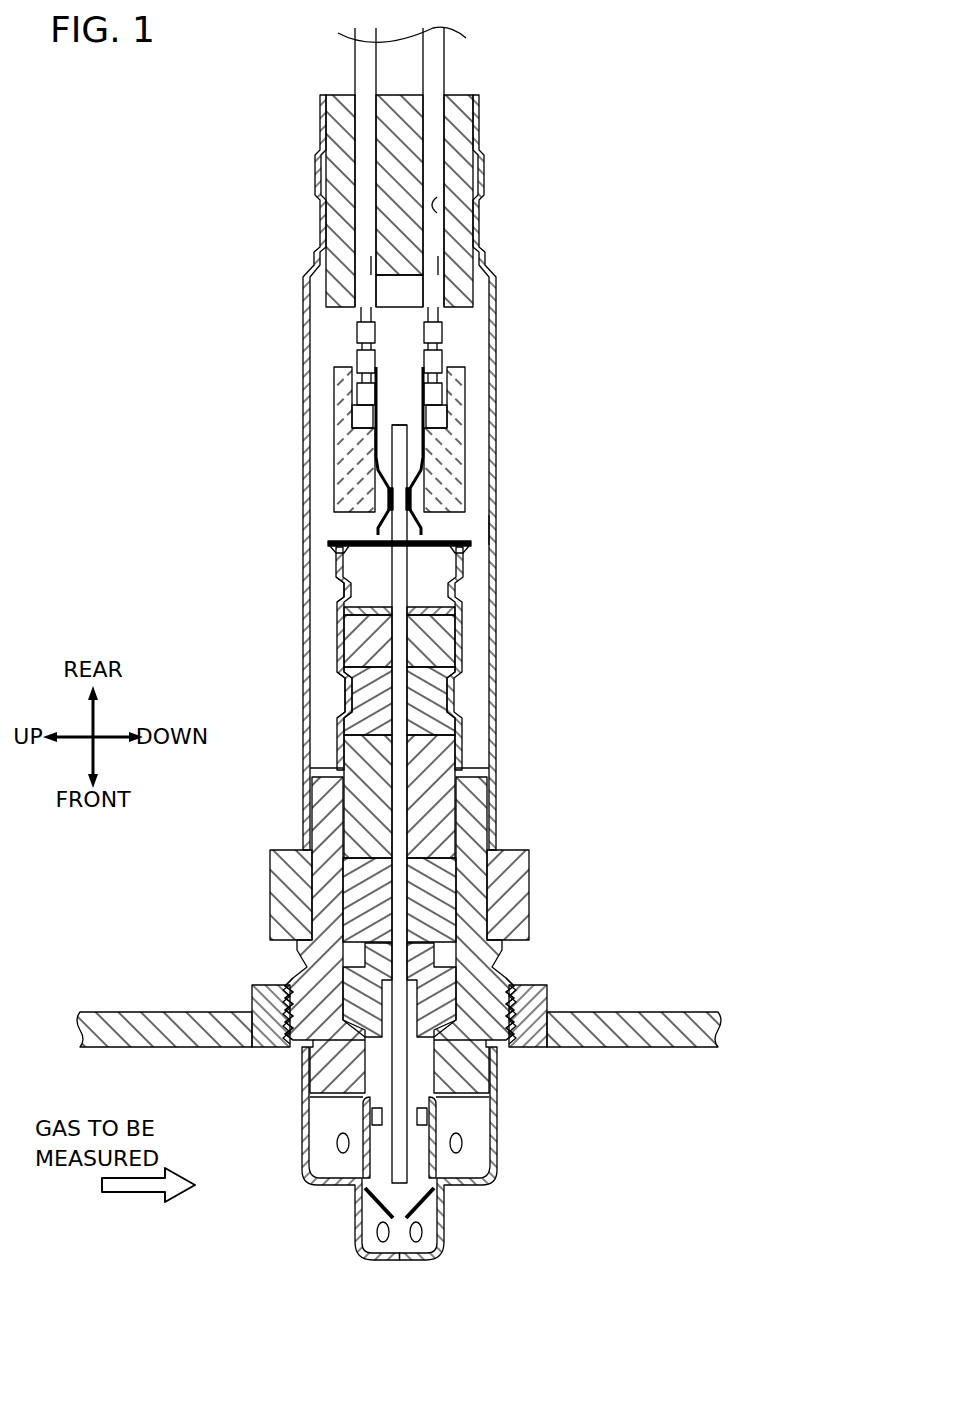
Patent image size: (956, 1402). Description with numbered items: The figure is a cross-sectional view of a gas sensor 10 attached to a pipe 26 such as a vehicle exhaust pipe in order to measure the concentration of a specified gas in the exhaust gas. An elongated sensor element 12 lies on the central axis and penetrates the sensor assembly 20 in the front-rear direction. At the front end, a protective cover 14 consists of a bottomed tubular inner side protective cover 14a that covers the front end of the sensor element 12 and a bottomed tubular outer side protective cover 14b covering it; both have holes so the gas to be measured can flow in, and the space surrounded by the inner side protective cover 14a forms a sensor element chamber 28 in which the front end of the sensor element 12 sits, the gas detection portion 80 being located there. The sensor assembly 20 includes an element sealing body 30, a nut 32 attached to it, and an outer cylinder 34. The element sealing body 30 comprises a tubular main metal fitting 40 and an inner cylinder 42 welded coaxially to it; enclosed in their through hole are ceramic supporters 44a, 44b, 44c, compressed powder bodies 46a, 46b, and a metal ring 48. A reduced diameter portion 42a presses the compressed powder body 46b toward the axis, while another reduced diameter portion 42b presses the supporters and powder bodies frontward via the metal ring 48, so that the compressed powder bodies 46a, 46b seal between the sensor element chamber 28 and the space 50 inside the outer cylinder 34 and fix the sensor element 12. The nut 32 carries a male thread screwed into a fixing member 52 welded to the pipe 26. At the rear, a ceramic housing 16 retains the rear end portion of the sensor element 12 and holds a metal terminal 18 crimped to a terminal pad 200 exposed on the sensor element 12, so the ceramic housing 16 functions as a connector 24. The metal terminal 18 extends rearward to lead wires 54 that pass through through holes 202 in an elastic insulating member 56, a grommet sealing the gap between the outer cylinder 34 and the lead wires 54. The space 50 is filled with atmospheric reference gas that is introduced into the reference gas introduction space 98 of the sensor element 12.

The gas sensor 10 is at (460, 643).
The sensor element 12 is at (400, 820).
The protective cover 14 is at (458, 1153).
The inner side protective cover 14a is at (440, 1127).
The outer side protective cover 14b is at (495, 1147).
The ceramic housing 16 is at (460, 474).
The metal terminal 18 is at (362, 520).
The sensor assembly 20 is at (466, 770).
The connector 24 is at (333, 415).
The pipe 26 is at (137, 1025).
The sensor element chamber 28 is at (420, 1172).
The element sealing body 30 is at (462, 822).
The nut 32 is at (467, 991).
The outer cylinder 34 is at (496, 532).
The main metal fitting 40 is at (470, 882).
The inner cylinder 42 is at (458, 567).
The reduced diameter portion 42a is at (347, 690).
The reduced diameter portion 42b is at (345, 598).
The ceramic supporter 44a is at (425, 945).
The ceramic supporter 44b is at (445, 757).
The ceramic supporter 44c is at (440, 636).
The compressed powder body 46a is at (432, 868).
The compressed powder body 46b is at (445, 690).
The metal ring 48 is at (456, 609).
The space 50 is at (478, 334).
The fixing member 52 is at (272, 995).
The lead wire 54 is at (367, 142).
The elastic insulating member 56 is at (455, 237).
The gas detection portion 80 is at (398, 1208).
The reference gas introduction space 98 is at (399, 425).
The terminal pad 200 is at (392, 496).
The through hole 202 is at (445, 200).